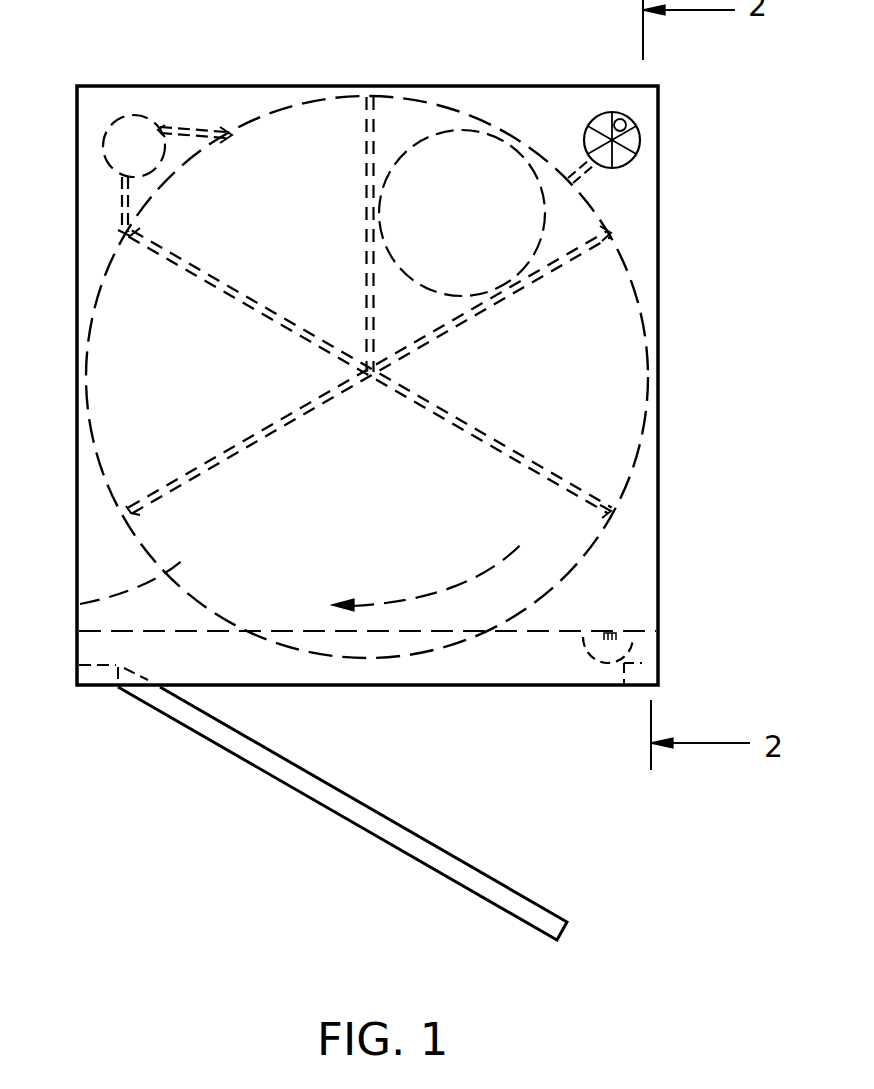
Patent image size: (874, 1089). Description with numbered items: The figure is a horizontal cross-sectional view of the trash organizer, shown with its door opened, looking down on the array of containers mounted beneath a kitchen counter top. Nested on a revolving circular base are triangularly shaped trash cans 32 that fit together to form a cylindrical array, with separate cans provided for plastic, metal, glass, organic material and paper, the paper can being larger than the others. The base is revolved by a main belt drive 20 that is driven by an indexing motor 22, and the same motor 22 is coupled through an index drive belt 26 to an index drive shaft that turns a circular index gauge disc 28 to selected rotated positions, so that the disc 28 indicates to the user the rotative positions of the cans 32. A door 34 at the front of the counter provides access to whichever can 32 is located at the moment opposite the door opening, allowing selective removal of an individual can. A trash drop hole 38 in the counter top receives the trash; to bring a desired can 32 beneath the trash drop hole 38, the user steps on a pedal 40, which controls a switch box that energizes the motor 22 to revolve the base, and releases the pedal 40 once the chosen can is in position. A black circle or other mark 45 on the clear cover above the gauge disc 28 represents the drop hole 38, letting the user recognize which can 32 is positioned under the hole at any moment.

The main belt drive 20 is at (188, 122).
The indexing motor 22 is at (137, 114).
The index drive belt 26 is at (598, 170).
The index gauge disc 28 is at (632, 141).
The trash cans 32 is at (295, 120).
The door 34 is at (378, 818).
The trash drop hole 38 is at (443, 108).
The pedal 40 is at (645, 645).
The mark 45 is at (628, 124).